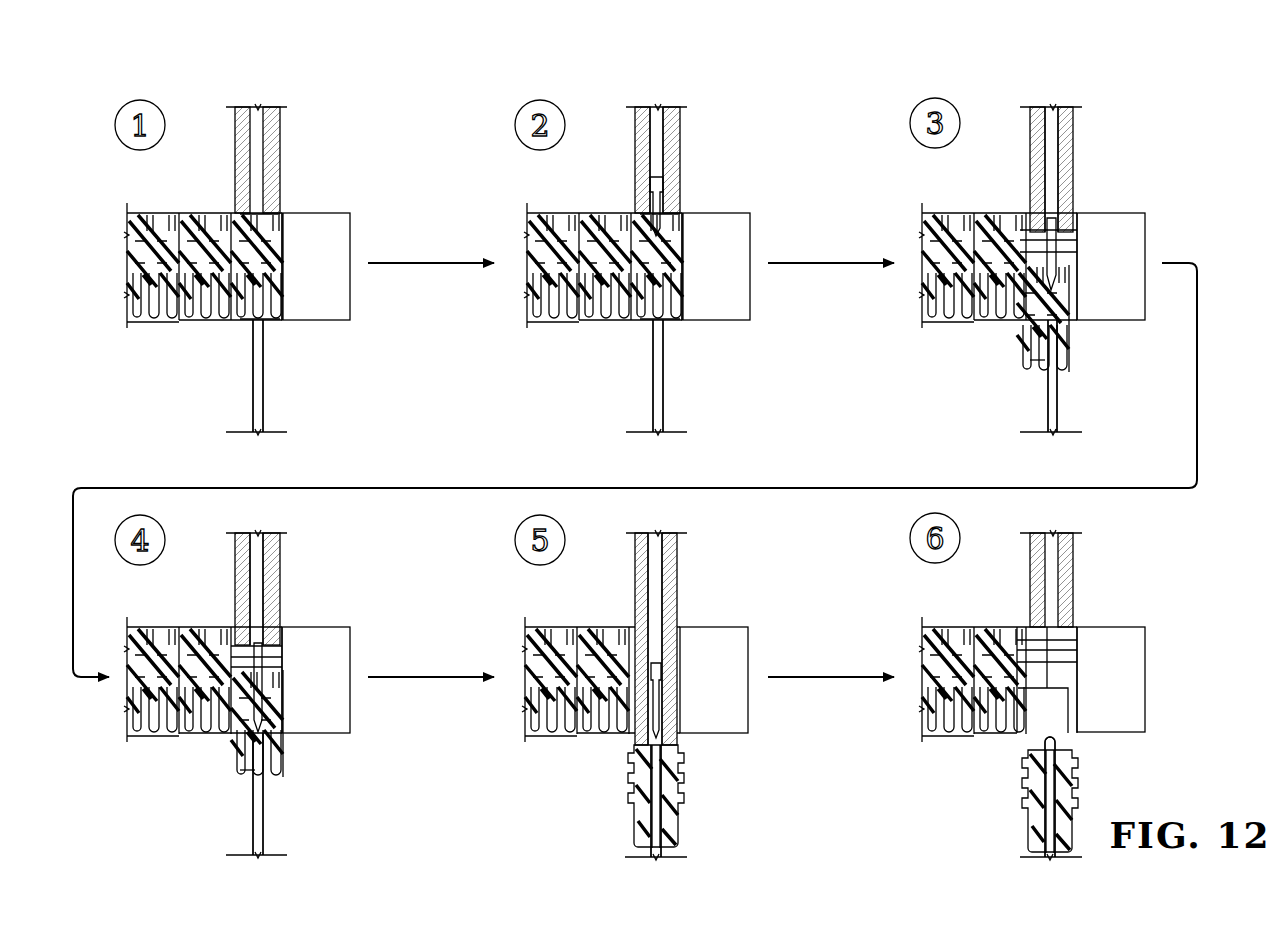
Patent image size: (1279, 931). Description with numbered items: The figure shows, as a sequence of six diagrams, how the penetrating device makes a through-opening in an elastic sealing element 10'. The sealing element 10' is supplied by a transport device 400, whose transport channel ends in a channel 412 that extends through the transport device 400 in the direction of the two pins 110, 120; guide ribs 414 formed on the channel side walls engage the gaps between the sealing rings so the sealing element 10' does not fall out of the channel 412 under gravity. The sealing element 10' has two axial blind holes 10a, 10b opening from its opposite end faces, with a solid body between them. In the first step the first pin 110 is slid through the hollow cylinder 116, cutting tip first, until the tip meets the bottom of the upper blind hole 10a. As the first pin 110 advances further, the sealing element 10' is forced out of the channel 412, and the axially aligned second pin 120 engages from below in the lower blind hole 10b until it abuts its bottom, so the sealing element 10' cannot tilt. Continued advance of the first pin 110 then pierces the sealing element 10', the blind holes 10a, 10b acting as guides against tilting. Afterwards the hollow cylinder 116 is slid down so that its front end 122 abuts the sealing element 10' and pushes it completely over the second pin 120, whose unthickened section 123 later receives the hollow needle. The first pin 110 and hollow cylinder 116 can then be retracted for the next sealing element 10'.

The sealing element 10' is at (601, 509).
The upper blind hole 10a is at (257, 228).
The lower blind hole 10b is at (258, 305).
The first pin 110 is at (655, 145).
The hollow cylinder 116 is at (276, 141).
The second pin 120 is at (258, 384).
The unthickened section 123 is at (258, 384).
The front end 122 is at (1030, 228).
The transport device 400 is at (346, 231).
The channel 412 is at (280, 300).
The guide ribs 414 is at (1062, 650).